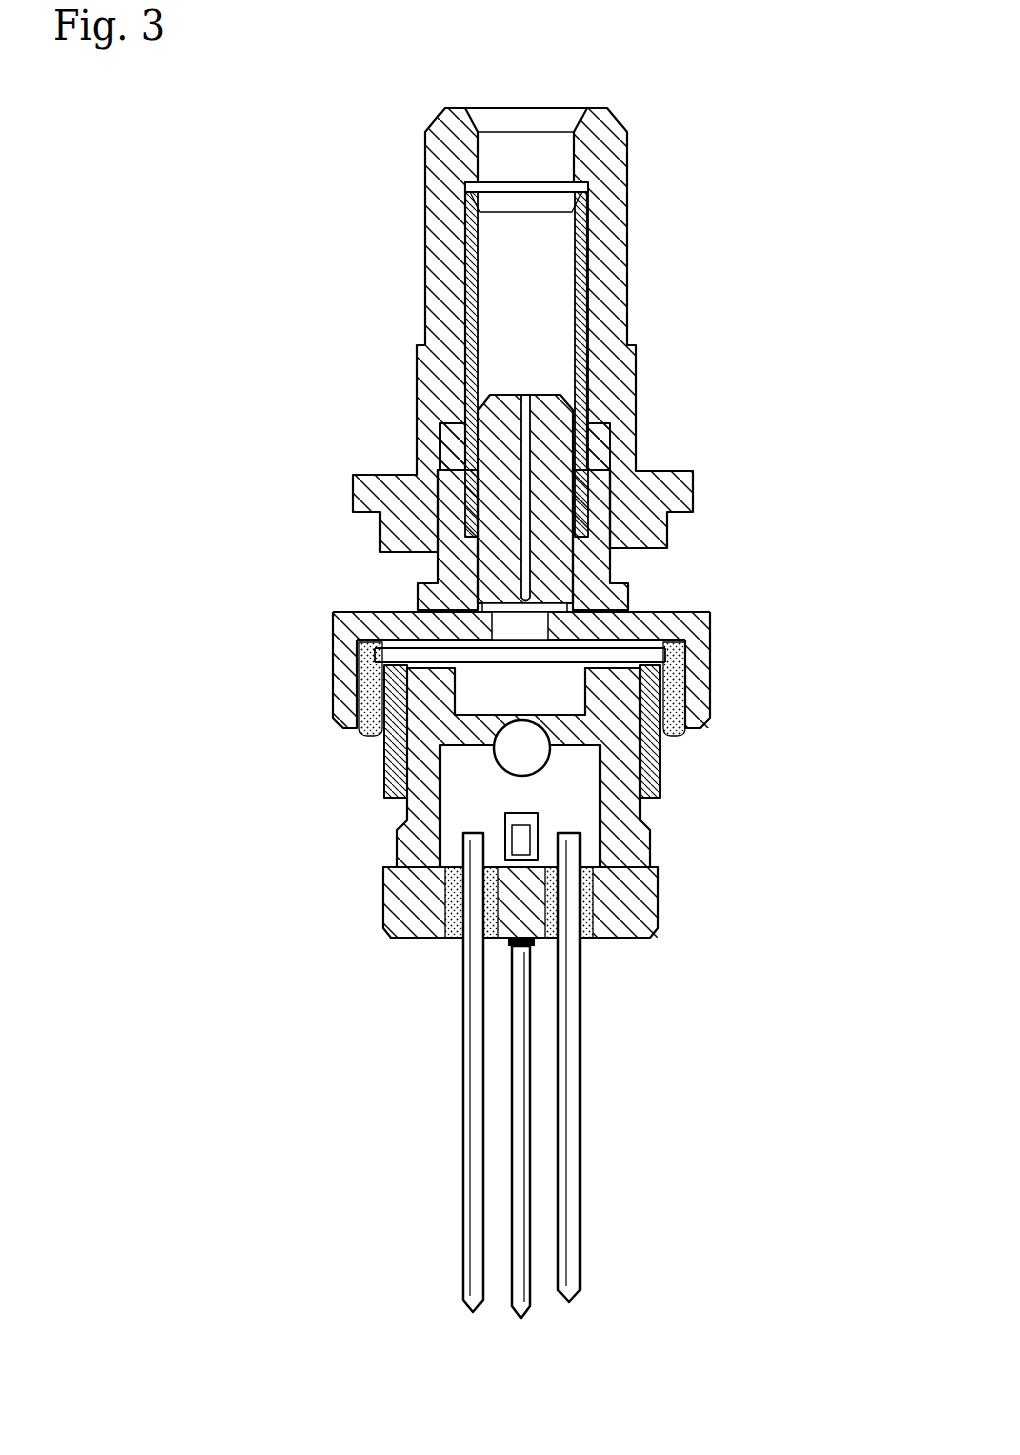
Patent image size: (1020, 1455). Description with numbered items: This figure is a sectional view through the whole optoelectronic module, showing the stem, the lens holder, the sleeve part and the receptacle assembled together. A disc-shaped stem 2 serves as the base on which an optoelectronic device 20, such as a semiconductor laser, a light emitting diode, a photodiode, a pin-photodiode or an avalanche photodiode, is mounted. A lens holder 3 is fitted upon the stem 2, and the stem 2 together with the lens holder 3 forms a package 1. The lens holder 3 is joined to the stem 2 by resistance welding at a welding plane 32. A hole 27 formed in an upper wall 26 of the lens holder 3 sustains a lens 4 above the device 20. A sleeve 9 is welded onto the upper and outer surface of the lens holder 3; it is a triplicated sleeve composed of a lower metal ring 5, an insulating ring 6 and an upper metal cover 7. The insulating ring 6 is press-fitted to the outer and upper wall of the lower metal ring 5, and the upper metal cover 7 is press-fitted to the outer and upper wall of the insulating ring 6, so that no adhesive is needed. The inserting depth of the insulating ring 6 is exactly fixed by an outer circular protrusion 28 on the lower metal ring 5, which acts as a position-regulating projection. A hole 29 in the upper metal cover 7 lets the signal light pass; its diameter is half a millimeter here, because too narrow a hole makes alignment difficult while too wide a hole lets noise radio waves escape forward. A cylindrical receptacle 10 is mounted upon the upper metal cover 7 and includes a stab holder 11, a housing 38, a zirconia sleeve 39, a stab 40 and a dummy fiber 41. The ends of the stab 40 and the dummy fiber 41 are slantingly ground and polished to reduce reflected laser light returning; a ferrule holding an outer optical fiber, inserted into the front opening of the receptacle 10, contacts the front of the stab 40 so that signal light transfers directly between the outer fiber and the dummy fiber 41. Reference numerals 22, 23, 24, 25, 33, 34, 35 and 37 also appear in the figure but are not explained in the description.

The package 1 is at (690, 922).
The stem 2 is at (410, 916).
The lens holder 3 is at (420, 812).
The lens 4 is at (527, 758).
The lower metal ring 5 is at (672, 740).
The insulating ring 6 is at (687, 705).
The upper metal cover 7 is at (346, 656).
The sleeve 9 is at (270, 649).
The receptacle 10 is at (722, 107).
The stab holder 11 is at (596, 571).
The optoelectronic device 20 is at (533, 828).
The lead pin 22 is at (468, 1091).
The lead pin 23 is at (513, 1144).
The lead pin 24 is at (560, 1091).
The side surface of holder 25 is at (645, 846).
The upper wall 26 is at (470, 736).
The hole 27 is at (496, 750).
The outer circular protrusion 28 is at (380, 738).
The hole 29 is at (540, 625).
The welding plane 32 is at (400, 868).
The cap lower end 33 is at (405, 791).
The cap inner surface 34 is at (712, 723).
The cap side wall 35 is at (685, 677).
The bottom surface of receptacle 37 is at (428, 598).
The housing 38 is at (445, 430).
The zirconia sleeve 39 is at (470, 264).
The stab 40 is at (440, 579).
The dummy fiber 41 is at (532, 508).